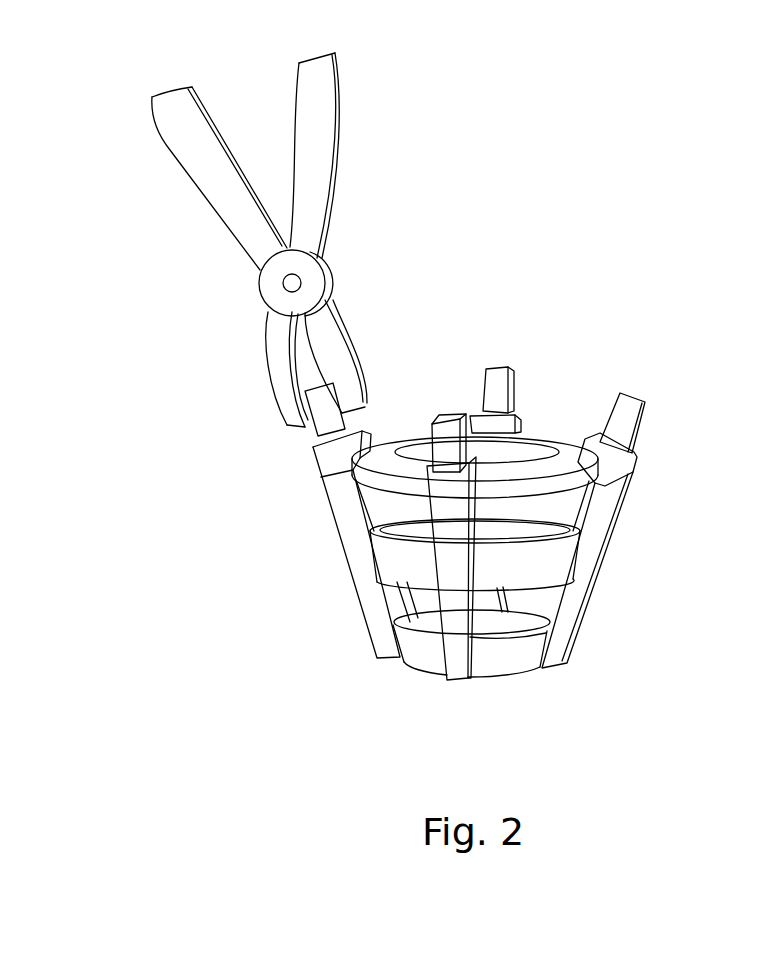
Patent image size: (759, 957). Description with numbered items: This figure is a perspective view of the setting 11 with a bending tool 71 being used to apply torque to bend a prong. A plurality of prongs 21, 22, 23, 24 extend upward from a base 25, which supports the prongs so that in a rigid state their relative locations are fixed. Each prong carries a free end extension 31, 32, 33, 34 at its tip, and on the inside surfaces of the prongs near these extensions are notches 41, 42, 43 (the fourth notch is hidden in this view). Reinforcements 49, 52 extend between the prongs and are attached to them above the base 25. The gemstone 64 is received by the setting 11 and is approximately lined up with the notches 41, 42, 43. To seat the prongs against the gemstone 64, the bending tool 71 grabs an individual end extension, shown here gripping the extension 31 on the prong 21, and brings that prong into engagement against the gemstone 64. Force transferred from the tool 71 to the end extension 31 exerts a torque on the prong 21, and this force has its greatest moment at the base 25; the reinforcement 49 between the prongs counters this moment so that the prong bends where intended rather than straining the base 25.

The setting 11 is at (620, 317).
The bending tool 71 is at (343, 147).
The free end extension 31 is at (315, 435).
The notch 41 is at (322, 480).
The prong 21 is at (332, 522).
The reinforcement 49 is at (393, 560).
The free end extension 34 is at (377, 497).
The reinforcement 52 is at (550, 565).
The prong 24 is at (442, 615).
The base 25 is at (500, 670).
The notch 42 is at (466, 413).
The gemstone 64 is at (433, 442).
The prong 22 is at (522, 418).
The free end extension 32 is at (485, 372).
The free end extension 33 is at (635, 395).
The notch 43 is at (600, 480).
The prong 23 is at (625, 472).